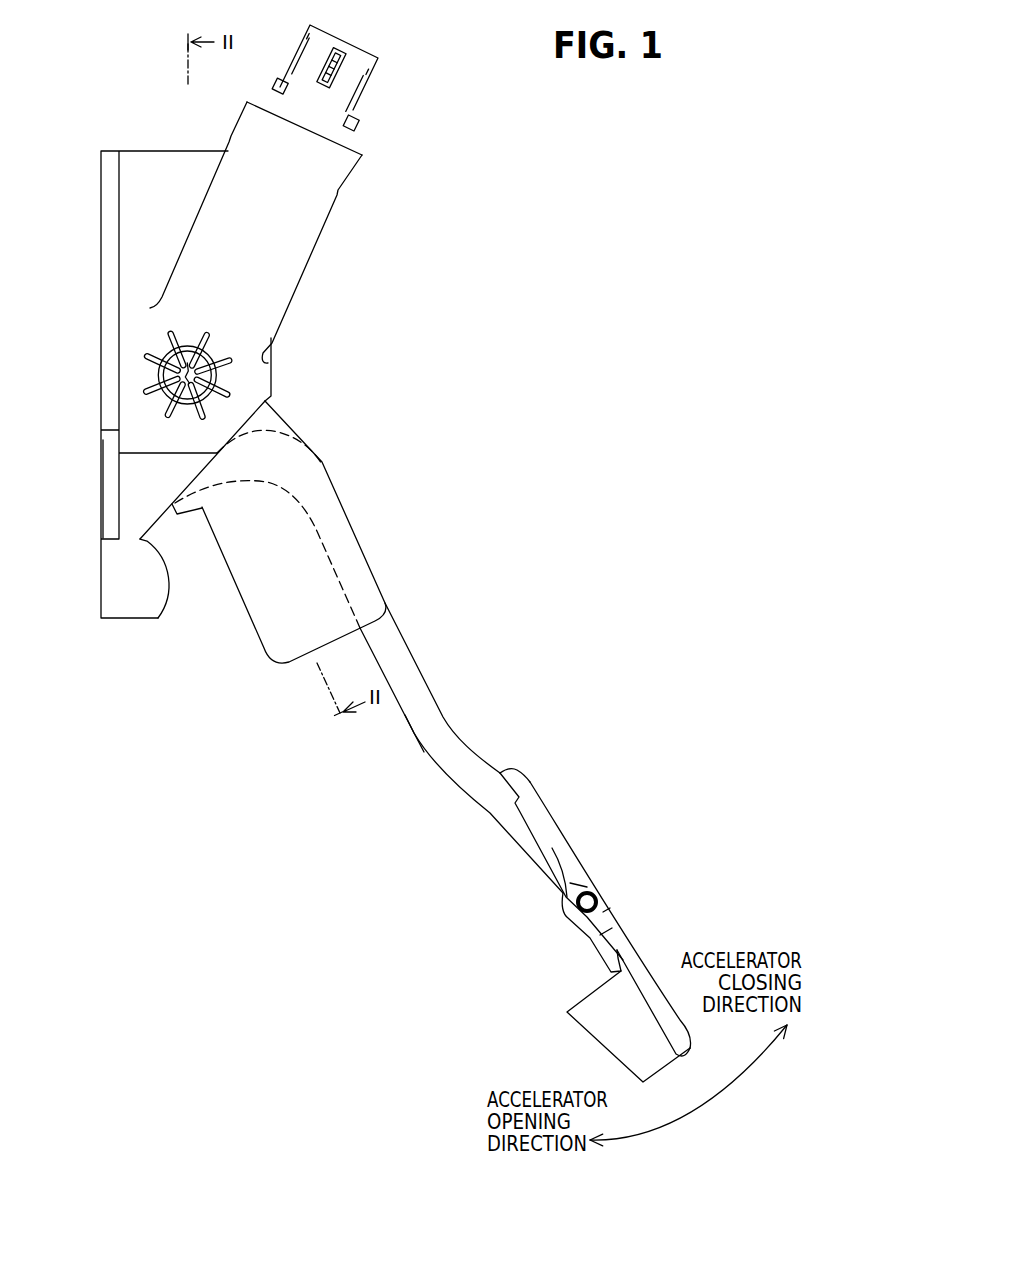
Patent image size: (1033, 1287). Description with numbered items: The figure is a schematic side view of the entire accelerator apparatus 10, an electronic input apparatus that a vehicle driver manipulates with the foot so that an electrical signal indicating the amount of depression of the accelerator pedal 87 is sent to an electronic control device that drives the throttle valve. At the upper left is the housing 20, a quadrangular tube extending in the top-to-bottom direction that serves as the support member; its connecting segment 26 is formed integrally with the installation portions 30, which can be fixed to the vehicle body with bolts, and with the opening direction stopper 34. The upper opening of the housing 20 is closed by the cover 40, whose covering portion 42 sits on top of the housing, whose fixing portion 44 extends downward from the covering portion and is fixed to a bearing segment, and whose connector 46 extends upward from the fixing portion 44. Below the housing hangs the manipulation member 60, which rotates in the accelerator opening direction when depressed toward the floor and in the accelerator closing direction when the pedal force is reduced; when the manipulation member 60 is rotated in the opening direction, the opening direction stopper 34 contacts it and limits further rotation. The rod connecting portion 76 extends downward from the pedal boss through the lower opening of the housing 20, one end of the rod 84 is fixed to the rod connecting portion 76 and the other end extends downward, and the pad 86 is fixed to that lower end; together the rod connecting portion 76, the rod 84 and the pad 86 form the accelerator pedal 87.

The accelerator apparatus 10 is at (379, 553).
The housing 20 is at (135, 400).
The connecting segment 26 is at (108, 308).
The installation portions 30 is at (110, 482).
The opening direction stopper 34 is at (172, 590).
The cover 40 is at (247, 222).
The covering portion 42 is at (168, 148).
The fixing portion 44 is at (148, 229).
The connector 46 is at (362, 61).
The manipulation member 60 is at (428, 741).
The rod connecting portion 76 is at (275, 640).
The rod 84 is at (417, 733).
The pad 86 is at (568, 838).
The accelerator pedal 87 is at (663, 921).